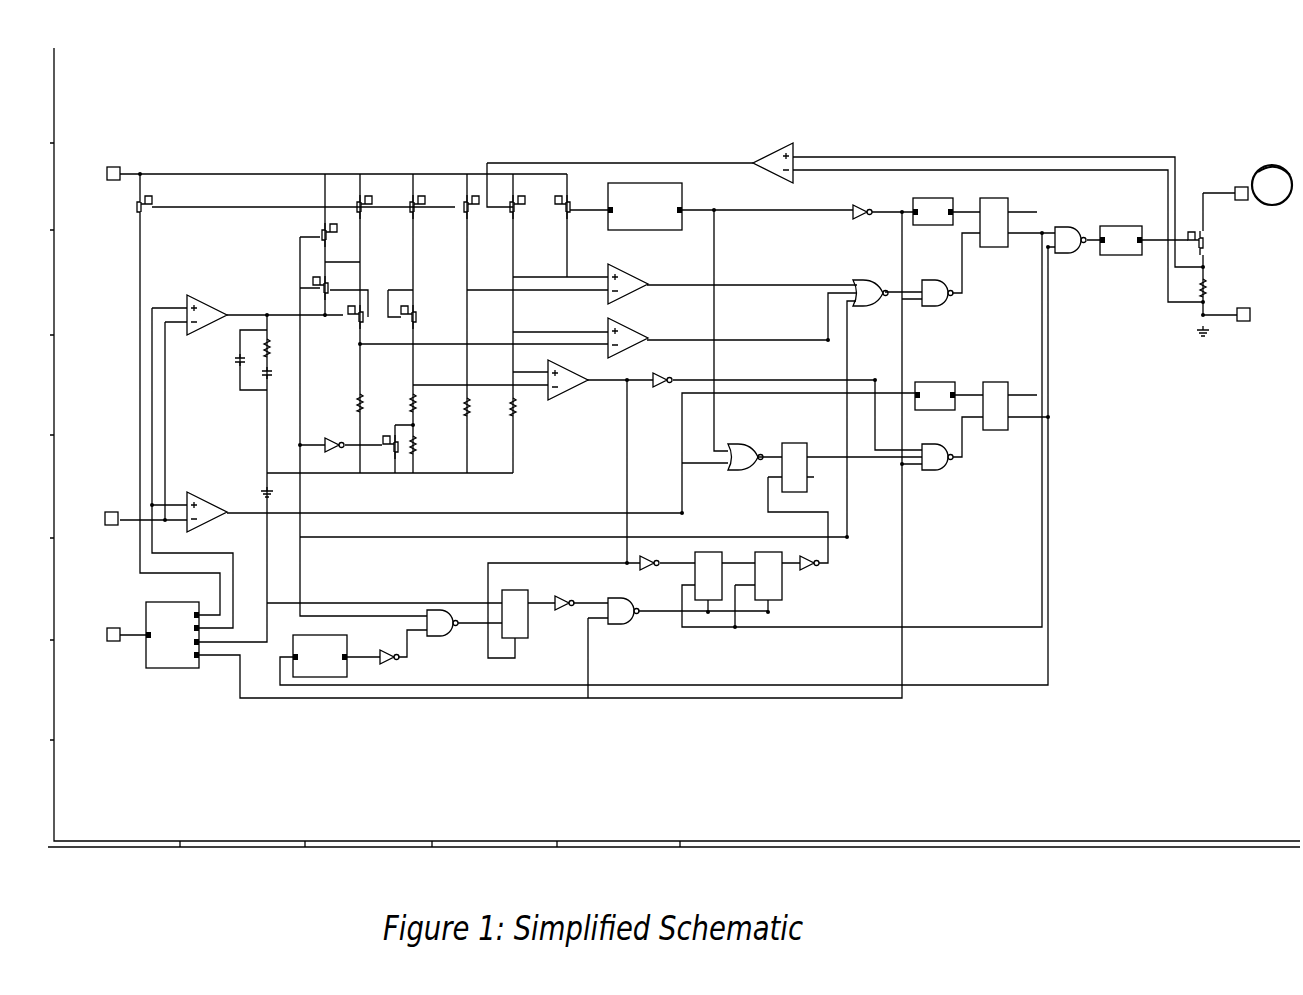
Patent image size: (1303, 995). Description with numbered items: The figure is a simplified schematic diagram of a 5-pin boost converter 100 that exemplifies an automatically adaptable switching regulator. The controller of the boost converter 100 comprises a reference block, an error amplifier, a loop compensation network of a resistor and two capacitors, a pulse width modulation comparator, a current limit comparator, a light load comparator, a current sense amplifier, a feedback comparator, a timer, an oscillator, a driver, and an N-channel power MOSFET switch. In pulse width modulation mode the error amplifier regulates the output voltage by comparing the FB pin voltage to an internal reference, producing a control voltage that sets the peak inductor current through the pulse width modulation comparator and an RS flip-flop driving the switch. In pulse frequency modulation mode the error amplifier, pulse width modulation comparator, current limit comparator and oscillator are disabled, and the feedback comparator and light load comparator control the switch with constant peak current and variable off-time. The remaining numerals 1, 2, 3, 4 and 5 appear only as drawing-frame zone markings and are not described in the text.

The 5-pin boost converter 100 is at (370, 118).
The drawing frame zone 1 is at (182, 844).
The drawing frame zone 2 is at (307, 844).
The drawing frame zone 3 is at (434, 844).
The drawing frame zone 4 is at (559, 844).
The drawing frame zone 5 is at (682, 844).